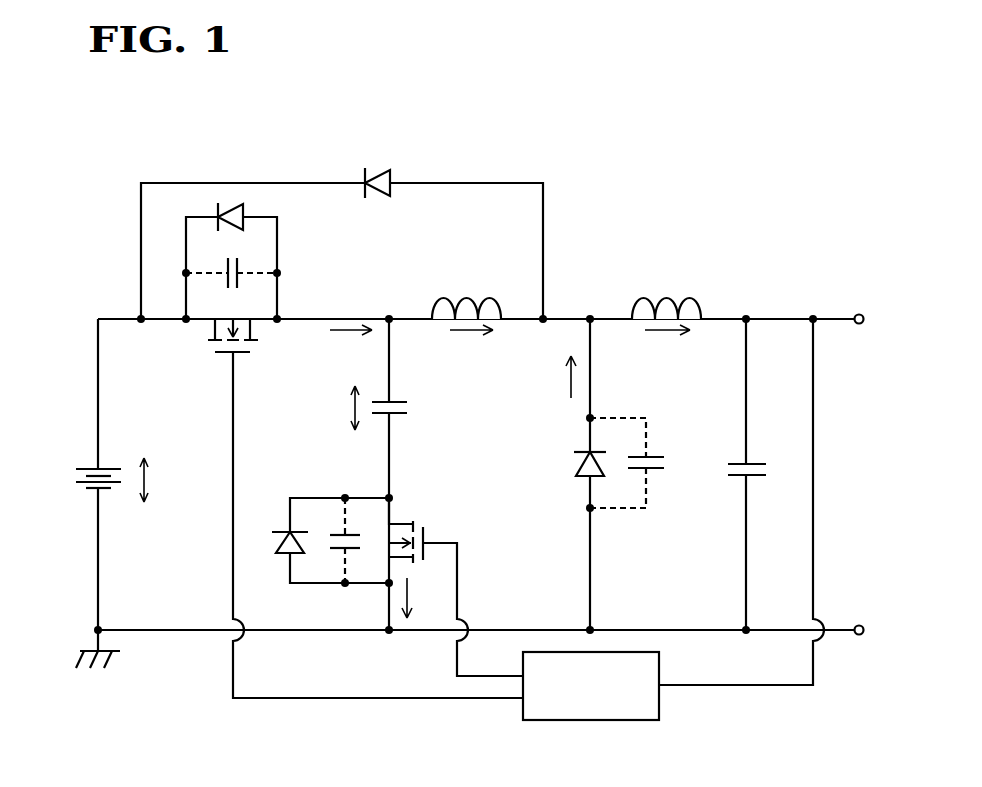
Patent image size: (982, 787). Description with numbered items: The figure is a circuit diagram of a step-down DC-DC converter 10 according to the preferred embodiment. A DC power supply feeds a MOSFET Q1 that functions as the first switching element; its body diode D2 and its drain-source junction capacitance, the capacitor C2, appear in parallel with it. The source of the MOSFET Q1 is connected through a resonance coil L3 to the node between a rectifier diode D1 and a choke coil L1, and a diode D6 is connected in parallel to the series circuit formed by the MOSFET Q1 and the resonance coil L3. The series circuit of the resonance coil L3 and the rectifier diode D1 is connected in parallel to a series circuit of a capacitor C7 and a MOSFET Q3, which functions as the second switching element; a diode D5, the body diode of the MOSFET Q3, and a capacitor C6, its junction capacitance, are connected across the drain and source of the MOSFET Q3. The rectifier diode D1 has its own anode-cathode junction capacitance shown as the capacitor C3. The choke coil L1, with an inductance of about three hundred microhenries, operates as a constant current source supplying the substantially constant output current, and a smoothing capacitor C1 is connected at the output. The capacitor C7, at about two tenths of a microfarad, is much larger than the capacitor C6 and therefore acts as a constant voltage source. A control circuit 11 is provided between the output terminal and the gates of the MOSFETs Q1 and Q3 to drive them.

The DC-DC converter 10 is at (796, 217).
The control circuit 11 is at (659, 700).
The diode D2 is at (267, 217).
The capacitor C2 is at (249, 273).
The diode D6 is at (373, 202).
The MOSFET Q1 is at (252, 340).
The resonance coil L3 is at (466, 291).
The choke coil L1 is at (666, 291).
The capacitor C7 is at (410, 412).
The MOSFET Q3 is at (414, 527).
The diode D5 is at (305, 526).
The capacitor C6 is at (342, 526).
The rectifier diode D1 is at (568, 463).
The capacitor C3 is at (640, 463).
The smoothing capacitor C1 is at (756, 457).